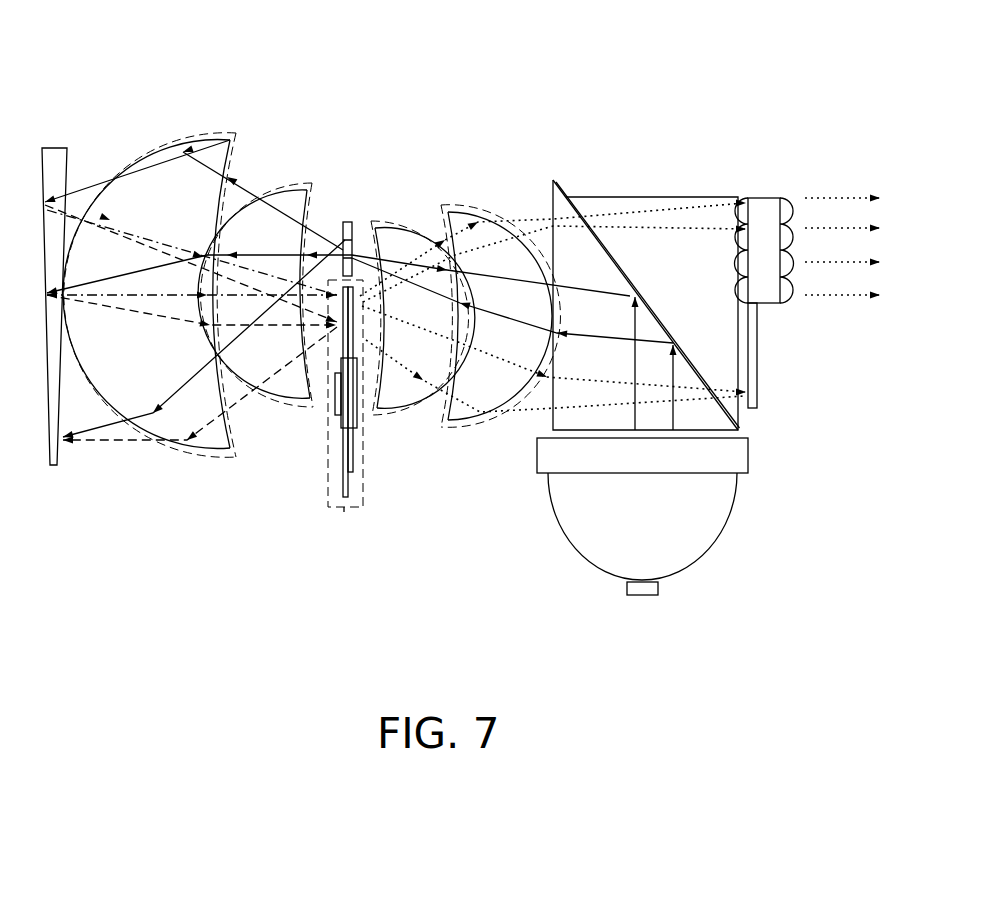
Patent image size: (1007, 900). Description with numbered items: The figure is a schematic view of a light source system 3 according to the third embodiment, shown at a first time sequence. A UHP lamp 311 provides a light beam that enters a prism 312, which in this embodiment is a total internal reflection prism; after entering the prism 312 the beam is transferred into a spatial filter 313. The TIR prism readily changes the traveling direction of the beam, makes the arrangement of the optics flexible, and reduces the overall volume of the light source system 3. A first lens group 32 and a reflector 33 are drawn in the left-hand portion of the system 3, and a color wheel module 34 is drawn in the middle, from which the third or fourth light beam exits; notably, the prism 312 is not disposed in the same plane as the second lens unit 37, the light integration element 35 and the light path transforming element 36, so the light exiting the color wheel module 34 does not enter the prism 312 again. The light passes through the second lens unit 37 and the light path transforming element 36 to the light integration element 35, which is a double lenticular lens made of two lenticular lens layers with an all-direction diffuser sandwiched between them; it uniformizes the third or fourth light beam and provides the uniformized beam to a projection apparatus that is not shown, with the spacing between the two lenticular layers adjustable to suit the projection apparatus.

The light source system 3 is at (157, 30).
The wedge plate (reflector) 33 is at (55, 148).
The lens group 32 is at (305, 185).
The spatial filter 313 is at (346, 222).
The color wheel module 34 is at (343, 512).
The second lens unit 37 is at (466, 430).
The prism 312 is at (660, 197).
The UHP lamp 311 is at (712, 546).
The light integration element 35 is at (757, 198).
The light path transforming element 36 is at (757, 380).